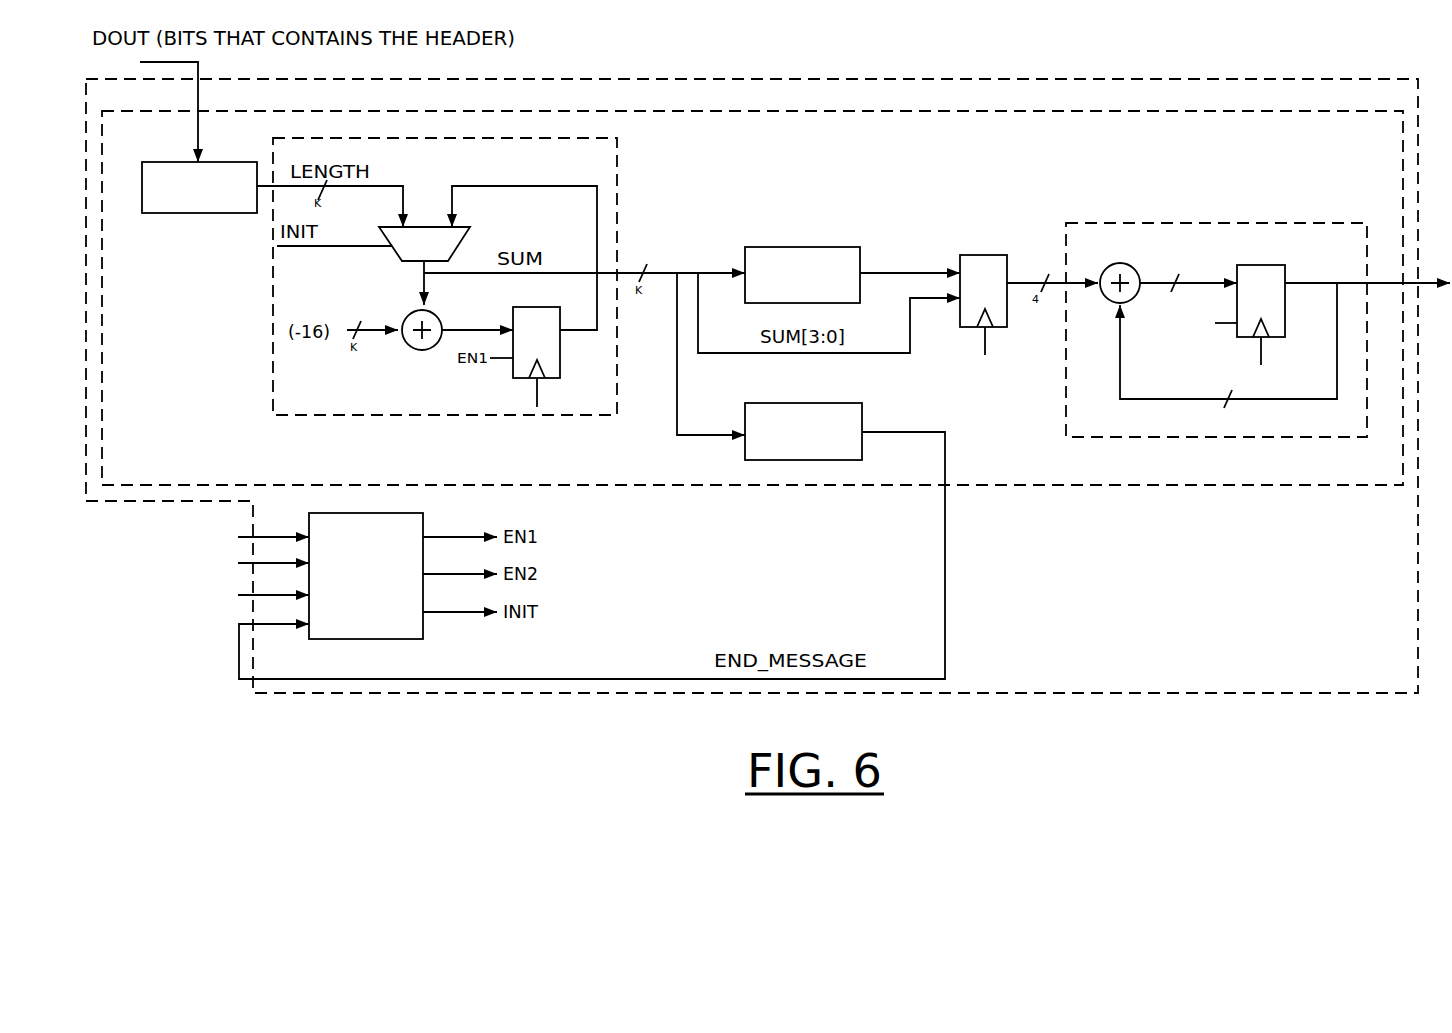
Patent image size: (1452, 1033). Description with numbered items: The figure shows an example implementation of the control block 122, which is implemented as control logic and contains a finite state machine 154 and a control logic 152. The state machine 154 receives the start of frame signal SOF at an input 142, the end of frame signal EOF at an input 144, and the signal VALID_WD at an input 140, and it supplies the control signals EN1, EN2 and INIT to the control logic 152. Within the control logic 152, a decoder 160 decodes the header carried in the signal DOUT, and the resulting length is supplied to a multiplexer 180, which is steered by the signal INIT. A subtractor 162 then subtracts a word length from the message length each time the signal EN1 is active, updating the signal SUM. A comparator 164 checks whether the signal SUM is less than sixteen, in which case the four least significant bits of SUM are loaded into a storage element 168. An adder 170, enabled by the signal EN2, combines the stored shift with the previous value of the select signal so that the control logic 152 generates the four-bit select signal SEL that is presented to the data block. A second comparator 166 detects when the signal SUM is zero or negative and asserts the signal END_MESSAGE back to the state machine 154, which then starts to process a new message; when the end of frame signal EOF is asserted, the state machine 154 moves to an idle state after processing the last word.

The control block 122 is at (757, 79).
The control logic 152 is at (678, 111).
The subtractor 162 is at (577, 138).
The decoder 160 is at (203, 213).
The multiplexer 180 is at (460, 226).
The comparator 164 is at (832, 247).
The comparator 166 is at (830, 403).
The storage element 168 is at (985, 255).
The adder 170 is at (1276, 223).
The finite state machine 154 is at (363, 640).
The input 142 is at (307, 544).
The input 144 is at (307, 571).
The input 140 is at (307, 600).